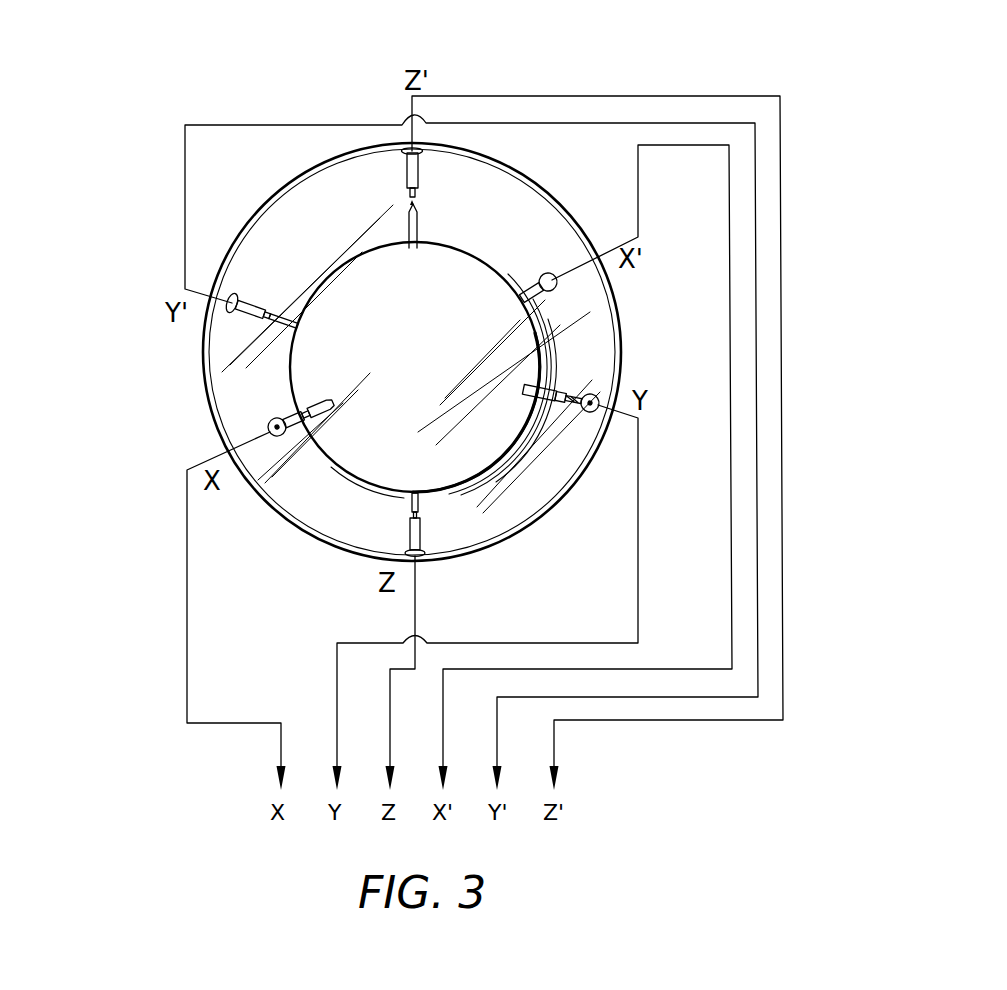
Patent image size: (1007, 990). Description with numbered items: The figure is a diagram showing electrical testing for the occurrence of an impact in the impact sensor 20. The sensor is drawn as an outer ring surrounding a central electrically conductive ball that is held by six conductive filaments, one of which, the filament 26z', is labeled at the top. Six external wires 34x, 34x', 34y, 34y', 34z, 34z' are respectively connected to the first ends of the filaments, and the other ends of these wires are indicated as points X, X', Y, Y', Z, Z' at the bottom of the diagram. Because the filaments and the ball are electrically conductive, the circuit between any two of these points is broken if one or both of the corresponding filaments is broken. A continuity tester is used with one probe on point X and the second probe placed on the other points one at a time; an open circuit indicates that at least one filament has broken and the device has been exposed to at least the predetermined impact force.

The impact sensor 20 is at (152, 107).
The filament 26z' is at (350, 145).
The external wire 34x is at (179, 611).
The external wire 34y is at (430, 597).
The external wire 34z is at (451, 673).
The external wire 34x' is at (656, 467).
The external wire 34y' is at (531, 452).
The external wire 34z' is at (645, 443).